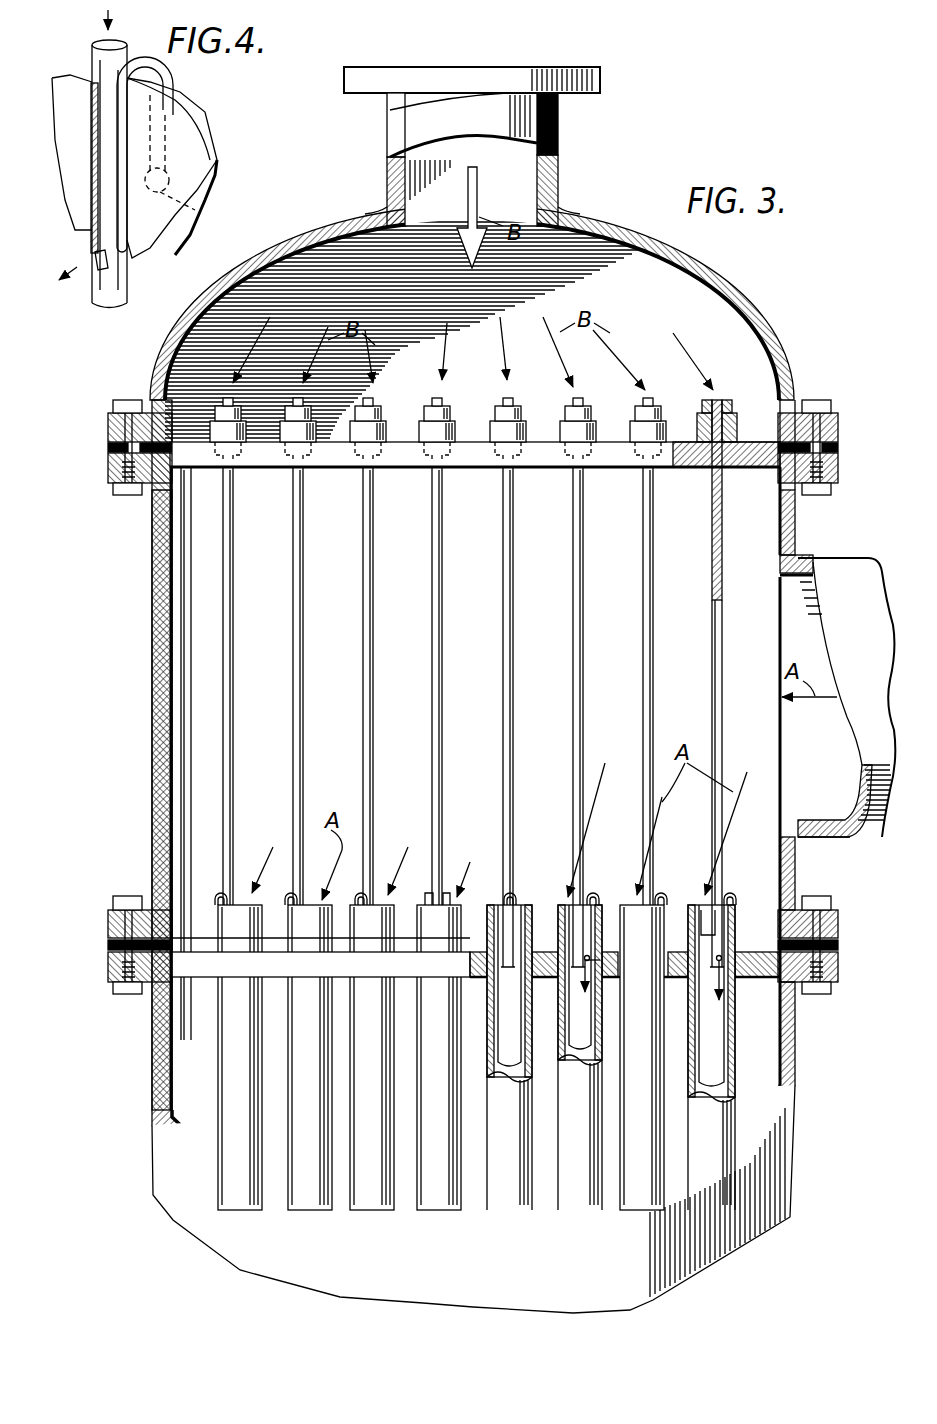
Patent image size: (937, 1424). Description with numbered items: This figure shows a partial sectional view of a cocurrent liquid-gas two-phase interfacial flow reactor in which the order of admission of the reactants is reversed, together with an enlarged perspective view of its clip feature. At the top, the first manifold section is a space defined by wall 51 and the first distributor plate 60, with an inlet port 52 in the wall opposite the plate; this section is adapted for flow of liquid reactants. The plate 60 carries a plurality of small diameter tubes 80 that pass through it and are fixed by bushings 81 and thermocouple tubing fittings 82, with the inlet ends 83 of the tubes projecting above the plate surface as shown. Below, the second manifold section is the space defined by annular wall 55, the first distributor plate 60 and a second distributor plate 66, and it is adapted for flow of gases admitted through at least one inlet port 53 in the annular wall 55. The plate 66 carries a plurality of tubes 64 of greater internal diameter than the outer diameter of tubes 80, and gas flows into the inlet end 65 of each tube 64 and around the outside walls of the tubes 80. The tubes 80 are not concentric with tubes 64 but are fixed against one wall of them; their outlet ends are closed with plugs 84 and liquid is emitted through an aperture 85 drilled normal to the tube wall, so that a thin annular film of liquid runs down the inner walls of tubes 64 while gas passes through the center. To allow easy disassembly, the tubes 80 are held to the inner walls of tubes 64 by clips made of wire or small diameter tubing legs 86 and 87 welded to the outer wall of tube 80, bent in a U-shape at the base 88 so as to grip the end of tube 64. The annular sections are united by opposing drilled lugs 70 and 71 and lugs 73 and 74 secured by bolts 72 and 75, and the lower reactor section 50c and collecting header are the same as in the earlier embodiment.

In FIG. 3, the reactor section 50c is at (797, 1066).
In FIG. 3, the first manifold section wall 51 is at (740, 291).
In FIG. 3, the inlet port 52 is at (557, 164).
In FIG. 3, the inlet port for gases 53 is at (843, 557).
In FIG. 3, the annular wall 55 is at (153, 655).
In FIG. 3, the first distributor plate 60 is at (548, 468).
In FIG. 3, the tubes 64 is at (290, 1137).
In FIG. 4, the tubes 64 is at (190, 135).
In FIG. 3, the inlet end 65 is at (495, 905).
In FIG. 3, the second distributor plate 66 is at (750, 978).
In FIG. 3, the drilled lug 70 is at (108, 430).
In FIG. 3, the drilled lug 71 is at (110, 470).
In FIG. 3, the bolt 72 is at (118, 400).
In FIG. 3, the drilled lug 73 is at (838, 930).
In FIG. 3, the drilled lug 74 is at (838, 972).
In FIG. 3, the bolt 75 is at (830, 900).
In FIG. 3, the small diameter tubes 80 is at (645, 610).
In FIG. 4, the small diameter tubes 80 is at (90, 290).
In FIG. 3, the bushings 81 is at (562, 426).
In FIG. 3, the thermocouple tubing fittings 82 is at (433, 404).
In FIG. 3, the inlet ends 83 is at (500, 387).
In FIG. 3, the plugs 84 is at (582, 967).
In FIG. 4, the plugs 84 is at (92, 310).
In FIG. 3, the aperture 85 is at (590, 957).
In FIG. 4, the aperture 85 is at (97, 258).
In FIG. 3, the clip leg 86 is at (430, 900).
In FIG. 4, the clip leg 86 is at (90, 74).
In FIG. 3, the clip leg 87 is at (447, 900).
In FIG. 4, the clip leg 87 is at (167, 78).
In FIG. 3, the base 88 is at (677, 917).
In FIG. 4, the base 88 is at (190, 203).